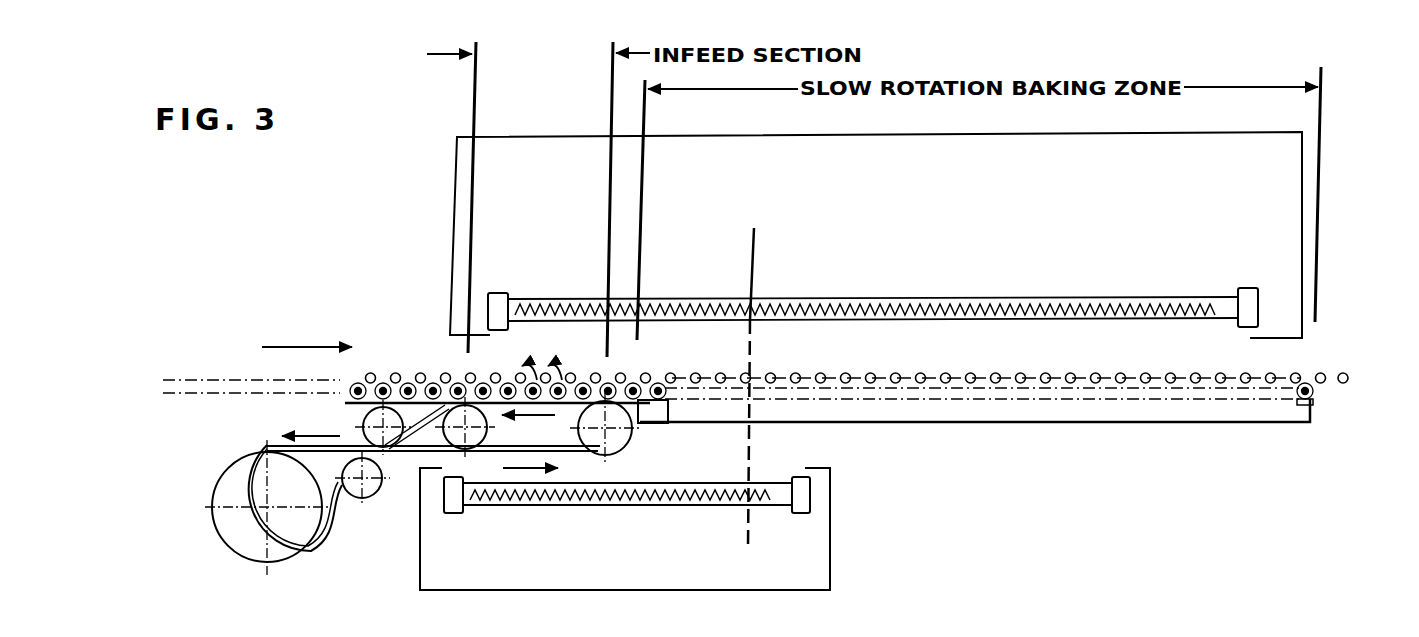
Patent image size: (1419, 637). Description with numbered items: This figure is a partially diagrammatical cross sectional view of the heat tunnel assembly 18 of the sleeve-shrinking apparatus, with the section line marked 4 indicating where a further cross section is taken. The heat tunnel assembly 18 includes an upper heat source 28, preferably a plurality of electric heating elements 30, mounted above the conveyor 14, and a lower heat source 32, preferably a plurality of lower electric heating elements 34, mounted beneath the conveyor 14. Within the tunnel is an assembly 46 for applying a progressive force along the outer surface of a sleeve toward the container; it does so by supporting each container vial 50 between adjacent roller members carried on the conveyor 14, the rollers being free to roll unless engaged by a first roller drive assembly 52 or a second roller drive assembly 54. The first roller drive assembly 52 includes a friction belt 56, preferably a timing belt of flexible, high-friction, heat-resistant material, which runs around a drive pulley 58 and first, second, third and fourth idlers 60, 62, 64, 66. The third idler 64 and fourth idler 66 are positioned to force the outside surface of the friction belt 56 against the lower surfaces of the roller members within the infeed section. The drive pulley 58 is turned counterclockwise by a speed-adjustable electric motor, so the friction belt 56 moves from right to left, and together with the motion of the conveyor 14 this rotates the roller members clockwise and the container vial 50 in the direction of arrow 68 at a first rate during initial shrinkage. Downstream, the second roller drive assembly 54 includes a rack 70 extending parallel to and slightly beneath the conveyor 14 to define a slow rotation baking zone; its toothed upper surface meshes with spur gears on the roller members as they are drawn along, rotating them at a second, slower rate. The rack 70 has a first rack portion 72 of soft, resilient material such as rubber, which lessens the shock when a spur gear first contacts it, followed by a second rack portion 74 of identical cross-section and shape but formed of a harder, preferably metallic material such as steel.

The section line 4- 4 is at (758, 240).
The conveyor 14 is at (303, 320).
The heat tunnel assembly 18 is at (1270, 127).
The upper heat source 28 is at (930, 296).
The electric heating elements 30 is at (1066, 296).
The lower heat source 32 is at (544, 513).
The lower electric heating elements 34 is at (665, 508).
The assembly for applying a progressive force 46 is at (362, 368).
The container vial 50 is at (370, 375).
The first roller drive assembly 52 is at (214, 461).
The second roller drive assembly 54 is at (1054, 442).
The friction belt 56 is at (417, 458).
The drive pulley 58 is at (238, 552).
The first idler 60 is at (362, 499).
The second idler 62 is at (299, 418).
The third idler 64 is at (486, 428).
The fourth idler 66 is at (624, 440).
The arrow 68 is at (564, 372).
The rack 70 is at (862, 428).
The first rack portion 72 is at (652, 416).
The second rack portion 74 is at (972, 407).